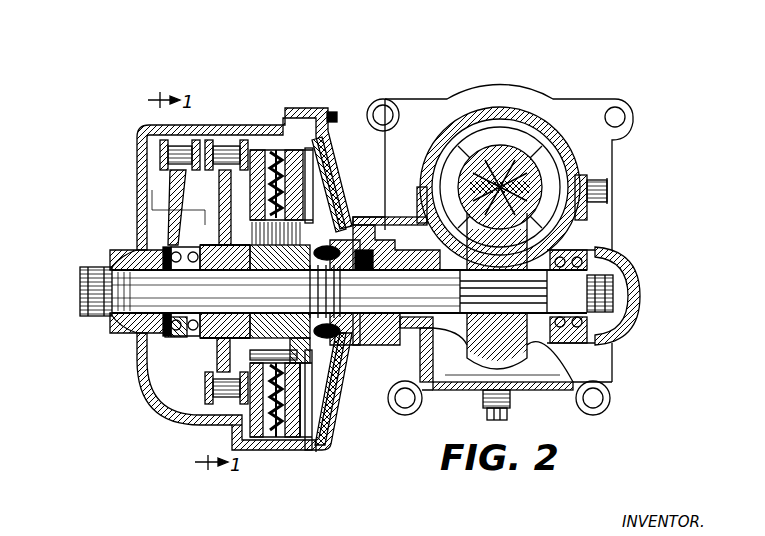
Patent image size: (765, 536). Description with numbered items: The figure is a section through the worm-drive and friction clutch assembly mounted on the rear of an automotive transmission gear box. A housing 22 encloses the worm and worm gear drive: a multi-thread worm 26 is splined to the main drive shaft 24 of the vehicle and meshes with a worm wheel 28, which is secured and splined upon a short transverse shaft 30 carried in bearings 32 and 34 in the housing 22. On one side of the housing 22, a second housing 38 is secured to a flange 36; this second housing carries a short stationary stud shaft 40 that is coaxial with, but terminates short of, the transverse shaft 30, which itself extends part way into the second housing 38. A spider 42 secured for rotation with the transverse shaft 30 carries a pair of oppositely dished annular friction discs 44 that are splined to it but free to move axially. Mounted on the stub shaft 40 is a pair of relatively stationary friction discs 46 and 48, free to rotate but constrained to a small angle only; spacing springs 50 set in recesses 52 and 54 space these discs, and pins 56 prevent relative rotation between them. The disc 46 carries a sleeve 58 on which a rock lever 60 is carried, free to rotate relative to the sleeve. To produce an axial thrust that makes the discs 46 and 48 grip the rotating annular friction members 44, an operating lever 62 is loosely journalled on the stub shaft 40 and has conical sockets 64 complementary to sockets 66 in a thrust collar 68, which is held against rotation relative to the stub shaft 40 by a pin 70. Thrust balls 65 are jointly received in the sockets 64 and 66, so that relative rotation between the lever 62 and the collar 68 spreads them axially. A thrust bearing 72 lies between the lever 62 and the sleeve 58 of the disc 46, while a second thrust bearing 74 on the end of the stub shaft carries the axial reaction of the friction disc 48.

The housing 22 is at (558, 122).
The main drive shaft 24 is at (503, 165).
The multi-thread worm 26 is at (487, 150).
The worm wheel 28 is at (520, 340).
The short transverse shaft 30 is at (447, 322).
The bearing 32 is at (378, 342).
The bearing 34 is at (577, 268).
The flange 36 is at (328, 420).
The second housing 38 is at (160, 405).
The stud shaft 40 is at (160, 268).
The spider 42 is at (330, 248).
The annular friction discs 44 is at (282, 430).
The friction disc 46 is at (256, 432).
The friction disc 48 is at (296, 432).
The spacing springs 50 is at (322, 172).
The recess 52 is at (250, 175).
The recess 54 is at (318, 212).
The pins 56 is at (212, 420).
The sleeve 58 is at (172, 352).
The rock lever 60 is at (226, 140).
The operating lever 62 is at (185, 168).
The conical sockets 64 is at (145, 320).
The thrust balls 65 is at (172, 250).
The sockets 66 is at (168, 262).
The thrust collar 68 is at (185, 325).
The pin 70 is at (170, 333).
The thrust bearing 72 is at (220, 340).
The second thrust bearing 74 is at (312, 234).